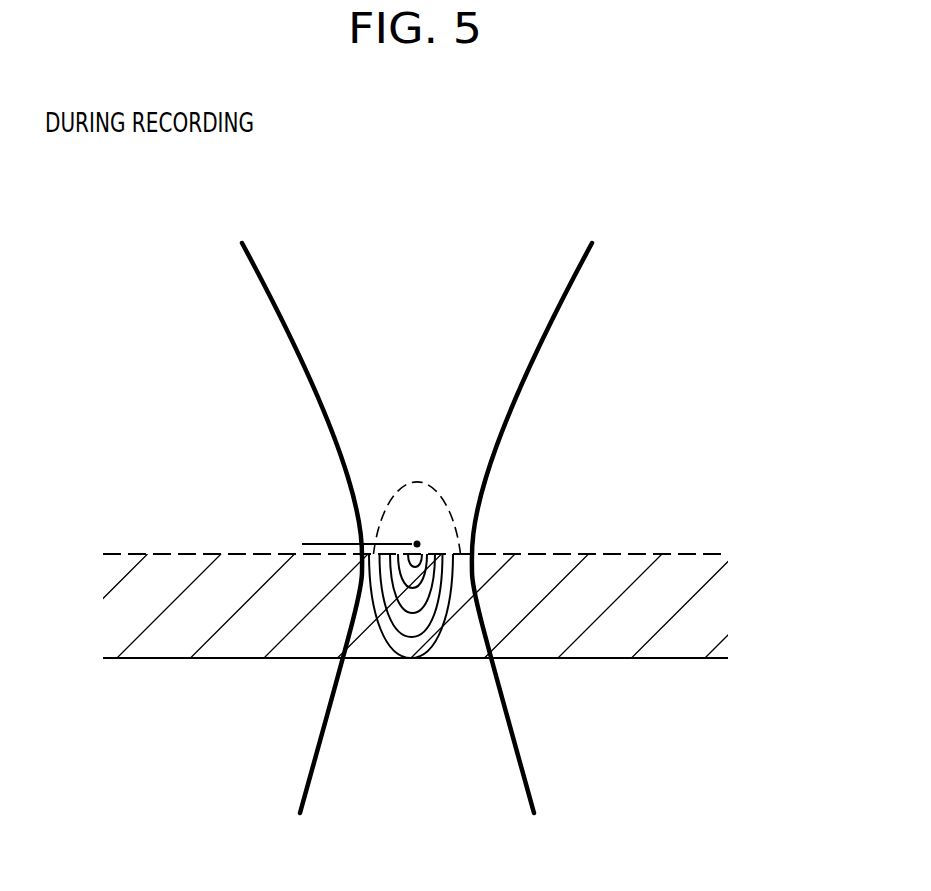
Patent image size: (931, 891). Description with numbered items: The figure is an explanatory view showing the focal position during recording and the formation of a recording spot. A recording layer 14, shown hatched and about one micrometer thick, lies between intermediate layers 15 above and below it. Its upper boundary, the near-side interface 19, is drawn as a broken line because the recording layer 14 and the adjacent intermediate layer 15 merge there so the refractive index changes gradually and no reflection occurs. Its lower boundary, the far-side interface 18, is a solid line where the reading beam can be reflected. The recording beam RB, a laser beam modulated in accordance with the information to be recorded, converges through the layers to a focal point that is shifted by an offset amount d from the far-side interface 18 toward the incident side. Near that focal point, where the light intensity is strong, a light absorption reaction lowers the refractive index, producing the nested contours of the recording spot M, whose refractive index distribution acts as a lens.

The recording layer 14 is at (712, 592).
The intermediate layer 15 is at (698, 372).
The far-side interface 18 is at (693, 658).
The near-side interface 19 is at (698, 555).
The recording beam RB is at (565, 292).
The recording spot M is at (448, 643).
The offset amount d is at (313, 544).